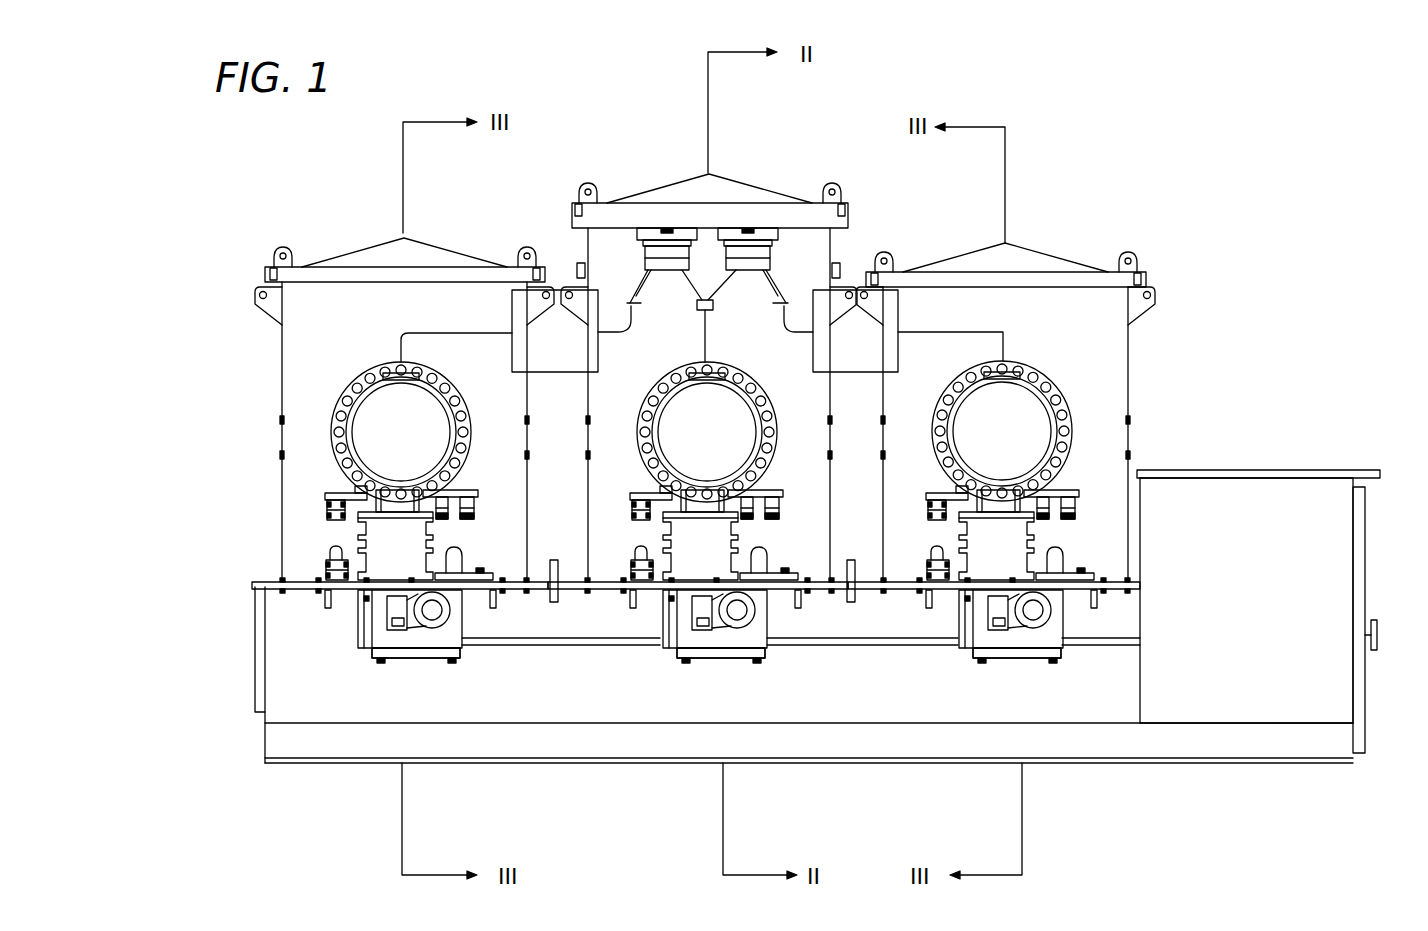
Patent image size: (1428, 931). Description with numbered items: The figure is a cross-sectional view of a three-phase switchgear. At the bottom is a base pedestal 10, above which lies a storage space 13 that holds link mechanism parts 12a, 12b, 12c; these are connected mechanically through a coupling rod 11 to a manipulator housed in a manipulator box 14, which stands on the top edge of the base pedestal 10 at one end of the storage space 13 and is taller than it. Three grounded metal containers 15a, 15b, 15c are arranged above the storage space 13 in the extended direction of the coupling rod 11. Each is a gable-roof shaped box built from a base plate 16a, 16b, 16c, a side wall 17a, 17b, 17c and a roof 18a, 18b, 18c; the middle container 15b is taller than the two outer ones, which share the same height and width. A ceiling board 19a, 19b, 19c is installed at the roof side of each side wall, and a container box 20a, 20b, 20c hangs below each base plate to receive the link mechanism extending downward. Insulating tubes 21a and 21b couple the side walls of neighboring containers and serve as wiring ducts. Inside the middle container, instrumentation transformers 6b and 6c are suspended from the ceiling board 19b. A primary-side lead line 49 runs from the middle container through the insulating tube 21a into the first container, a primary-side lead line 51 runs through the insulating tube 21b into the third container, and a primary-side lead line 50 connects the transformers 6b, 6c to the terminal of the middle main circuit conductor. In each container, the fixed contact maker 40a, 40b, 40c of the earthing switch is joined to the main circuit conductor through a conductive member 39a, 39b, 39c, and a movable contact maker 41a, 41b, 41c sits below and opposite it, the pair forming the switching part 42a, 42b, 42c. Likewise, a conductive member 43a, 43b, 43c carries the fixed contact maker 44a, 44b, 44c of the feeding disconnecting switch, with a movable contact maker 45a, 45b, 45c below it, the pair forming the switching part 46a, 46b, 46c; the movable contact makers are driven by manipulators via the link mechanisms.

The base pedestal 10 is at (553, 764).
The coupling rod 11 is at (833, 650).
The link mechanism part 12a is at (380, 640).
The link mechanism part 12b is at (668, 640).
The link mechanism part 12c is at (970, 642).
The storage space 13 is at (278, 690).
The manipulator box 14 is at (1310, 470).
The container 15a is at (370, 385).
The container 15b is at (696, 361).
The container 15c is at (997, 385).
The base plate 16a is at (305, 590).
The base plate 16b is at (615, 600).
The base plate 16c is at (905, 600).
The side wall 17a is at (278, 470).
The side wall 17b is at (586, 520).
The side wall 17c is at (882, 520).
The roof 18a is at (448, 250).
The roof 18b is at (757, 188).
The roof 18c is at (1050, 256).
The ceiling board 19a is at (313, 283).
The ceiling board 19b is at (600, 230).
The ceiling board 19c is at (940, 288).
The container box 20a is at (452, 652).
The container box 20b is at (758, 652).
The container box 20c is at (1060, 652).
The insulating tube 21a is at (553, 375).
The insulating tube 21b is at (855, 375).
The primary-side lead line 49 is at (478, 333).
The primary-side lead line 50 is at (708, 340).
The primary-side lead line 51 is at (1008, 348).
The instrumentation transformer 6b is at (667, 295).
The instrumentation transformer 6c is at (752, 295).
The conductive member 39a is at (325, 493).
The conductive member 39b is at (630, 493).
The conductive member 39c is at (928, 493).
The fixed contact maker 40a is at (327, 510).
The fixed contact maker 40b is at (632, 515).
The fixed contact maker 40c is at (928, 515).
The movable contact maker 41a is at (317, 554).
The movable contact maker 41b is at (636, 560).
The movable contact maker 41c is at (932, 560).
The switching part 42a is at (289, 540).
The switching part 42b is at (622, 533).
The switching part 42c is at (918, 533).
The conductive member 43a is at (468, 490).
The conductive member 43b is at (772, 490).
The conductive member 43c is at (1068, 490).
The fixed contact maker 44a is at (455, 520).
The fixed contact maker 44b is at (758, 520).
The fixed contact maker 44c is at (1055, 520).
The movable contact maker 45a is at (458, 558).
The movable contact maker 45b is at (762, 556).
The movable contact maker 45c is at (1057, 556).
The switching part 46a is at (472, 518).
The switching part 46b is at (775, 518).
The switching part 46c is at (1070, 518).